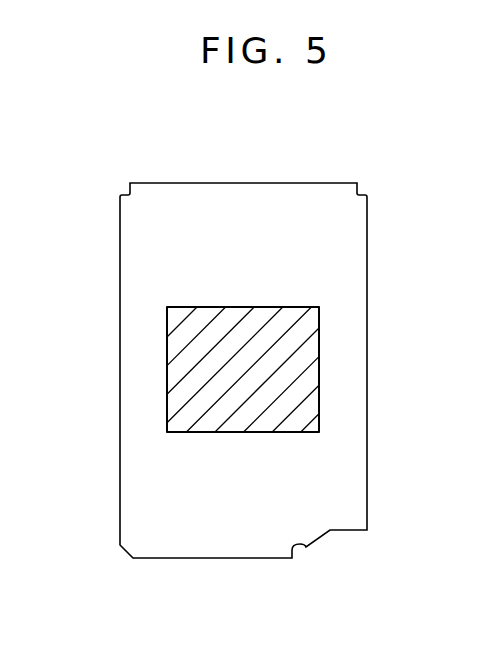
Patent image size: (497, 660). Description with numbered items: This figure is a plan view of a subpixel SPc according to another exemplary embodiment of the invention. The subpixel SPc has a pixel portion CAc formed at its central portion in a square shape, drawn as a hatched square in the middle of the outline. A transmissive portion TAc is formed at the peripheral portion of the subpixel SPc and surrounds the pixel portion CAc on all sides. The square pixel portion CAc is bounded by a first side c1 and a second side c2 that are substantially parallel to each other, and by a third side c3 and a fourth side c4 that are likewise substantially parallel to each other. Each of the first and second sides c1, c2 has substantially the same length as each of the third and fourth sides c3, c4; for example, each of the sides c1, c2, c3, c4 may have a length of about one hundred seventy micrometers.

The subpixel SPc is at (112, 165).
The transmissive portion TAc is at (143, 372).
The pixel portion CAc is at (192, 328).
The first side c1 is at (255, 307).
The second side c2 is at (232, 435).
The third side c3 is at (167, 408).
The fourth side c4 is at (319, 358).